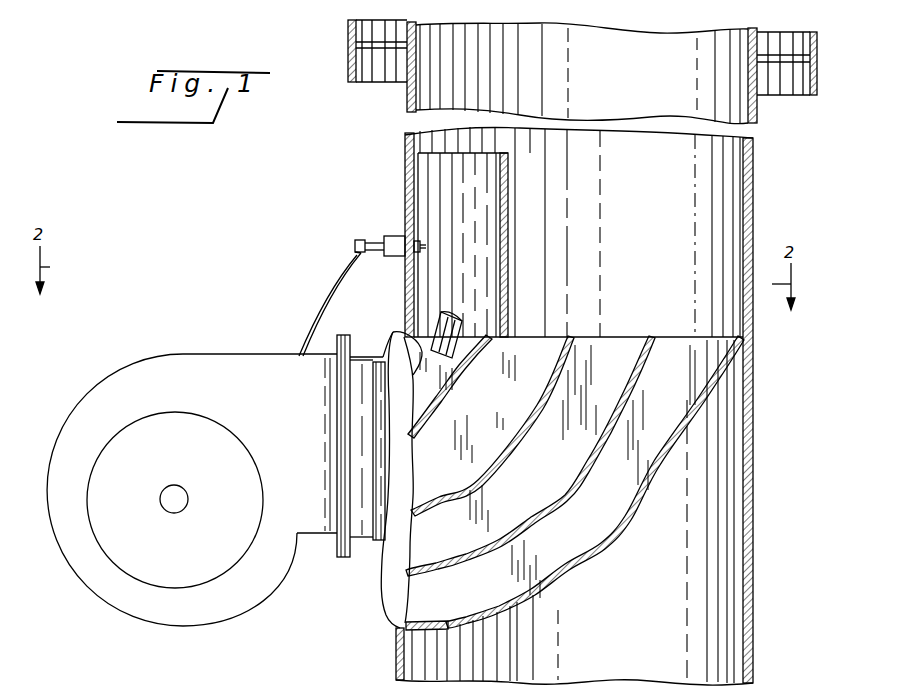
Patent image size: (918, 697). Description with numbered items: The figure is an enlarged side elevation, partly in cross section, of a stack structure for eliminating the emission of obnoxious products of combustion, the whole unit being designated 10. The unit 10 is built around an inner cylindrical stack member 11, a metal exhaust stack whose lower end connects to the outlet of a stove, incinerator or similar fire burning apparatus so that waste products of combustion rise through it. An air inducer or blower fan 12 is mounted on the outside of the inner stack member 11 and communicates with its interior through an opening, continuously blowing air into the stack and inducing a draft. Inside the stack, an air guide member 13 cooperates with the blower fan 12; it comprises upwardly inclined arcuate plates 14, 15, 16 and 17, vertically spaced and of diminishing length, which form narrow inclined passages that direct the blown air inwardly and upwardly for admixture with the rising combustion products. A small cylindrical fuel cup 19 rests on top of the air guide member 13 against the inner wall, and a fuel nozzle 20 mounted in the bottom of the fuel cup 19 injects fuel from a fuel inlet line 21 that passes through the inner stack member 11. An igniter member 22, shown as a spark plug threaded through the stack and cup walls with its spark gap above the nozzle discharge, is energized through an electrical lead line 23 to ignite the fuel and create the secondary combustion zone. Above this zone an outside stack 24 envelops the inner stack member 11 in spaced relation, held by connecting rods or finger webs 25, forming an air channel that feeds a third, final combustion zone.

The apparatus for the elimination of the emission of obnoxious products of combustio 10 is at (332, 665).
The inner cylindrical stack member 11 is at (750, 630).
The air inducer or blower fan 12 is at (186, 632).
The air guide member 13 is at (616, 336).
The upwardly inclined arcuate plate 14 is at (626, 512).
The upwardly inclined arcuate plate 15 is at (556, 488).
The upwardly inclined arcuate plate 16 is at (522, 430).
The upwardly inclined arcuate plate 17 is at (484, 344).
The fuel cup 19 is at (508, 215).
The fuel nozzle 20 is at (456, 318).
The fuel inlet line 21 is at (402, 338).
The igniter member 22 is at (395, 234).
The electrical lead line 23 is at (322, 309).
The outside stack 24 is at (346, 40).
The connecting rods or finger webs 25 is at (375, 50).